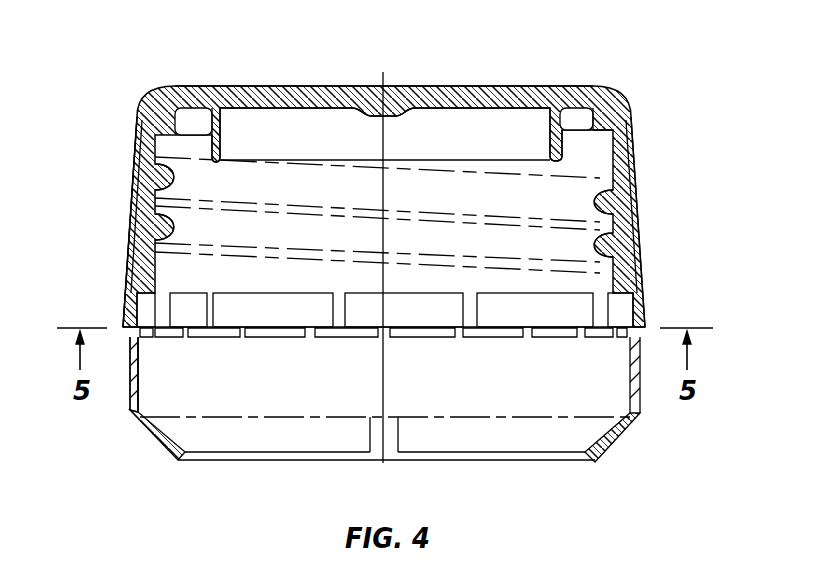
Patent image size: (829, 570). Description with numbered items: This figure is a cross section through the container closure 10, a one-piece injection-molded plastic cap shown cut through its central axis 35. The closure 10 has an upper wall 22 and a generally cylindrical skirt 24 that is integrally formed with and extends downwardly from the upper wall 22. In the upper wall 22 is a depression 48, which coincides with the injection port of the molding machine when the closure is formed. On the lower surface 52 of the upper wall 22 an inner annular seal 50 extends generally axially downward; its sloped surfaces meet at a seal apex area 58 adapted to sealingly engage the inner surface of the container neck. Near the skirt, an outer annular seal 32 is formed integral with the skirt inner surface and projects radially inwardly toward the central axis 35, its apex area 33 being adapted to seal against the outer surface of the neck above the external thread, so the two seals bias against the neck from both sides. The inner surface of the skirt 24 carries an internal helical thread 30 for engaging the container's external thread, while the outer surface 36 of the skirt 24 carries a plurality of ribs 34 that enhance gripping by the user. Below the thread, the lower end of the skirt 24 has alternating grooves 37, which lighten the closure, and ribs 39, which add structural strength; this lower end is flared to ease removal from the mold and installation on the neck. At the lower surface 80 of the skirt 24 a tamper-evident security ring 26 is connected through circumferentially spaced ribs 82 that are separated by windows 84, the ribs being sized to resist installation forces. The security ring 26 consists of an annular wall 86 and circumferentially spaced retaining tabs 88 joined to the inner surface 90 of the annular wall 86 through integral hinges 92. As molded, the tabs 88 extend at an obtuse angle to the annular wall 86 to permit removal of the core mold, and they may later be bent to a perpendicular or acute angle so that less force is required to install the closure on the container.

The closure 10 is at (583, 46).
The upper wall 22 is at (470, 96).
The skirt 24 is at (133, 227).
The tamper-evident security ring 26 is at (130, 404).
The internal helical thread 30 is at (511, 207).
The outer annular seal 32 is at (574, 117).
The apex area 33 is at (597, 124).
The ribs 34 is at (133, 172).
The central axis 35 is at (382, 140).
The outer surface 36 is at (142, 304).
The grooves 37 is at (214, 308).
The ribs 39 is at (127, 278).
The depression 48 is at (397, 96).
The inner annular seal 50 is at (214, 137).
The lower surface 52 is at (449, 109).
The seal apex area 58 is at (212, 142).
The lower surface 80 is at (640, 330).
The ribs 82 is at (241, 338).
The windows 84 is at (206, 326).
The annular wall 86 is at (133, 383).
The retaining tabs 88 is at (200, 451).
The inner surface 90 is at (327, 407).
The integral hinges 92 is at (143, 421).